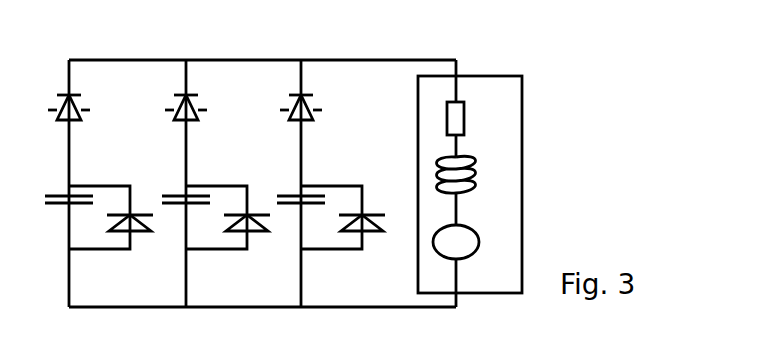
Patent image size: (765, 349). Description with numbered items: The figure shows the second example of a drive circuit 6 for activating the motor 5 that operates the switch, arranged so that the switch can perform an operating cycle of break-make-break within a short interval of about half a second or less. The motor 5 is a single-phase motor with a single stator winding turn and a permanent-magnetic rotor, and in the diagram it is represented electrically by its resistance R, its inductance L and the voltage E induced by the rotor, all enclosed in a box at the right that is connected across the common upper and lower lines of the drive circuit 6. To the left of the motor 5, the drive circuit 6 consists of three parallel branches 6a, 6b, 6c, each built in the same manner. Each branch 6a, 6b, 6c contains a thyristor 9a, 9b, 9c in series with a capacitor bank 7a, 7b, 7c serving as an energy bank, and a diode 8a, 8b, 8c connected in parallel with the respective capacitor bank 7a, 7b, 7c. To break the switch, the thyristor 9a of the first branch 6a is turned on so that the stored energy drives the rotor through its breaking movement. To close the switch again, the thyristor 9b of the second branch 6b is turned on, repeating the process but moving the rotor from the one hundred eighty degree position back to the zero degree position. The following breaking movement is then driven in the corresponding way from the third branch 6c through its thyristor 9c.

The motor 5 is at (522, 127).
The drive circuit 6 is at (360, 59).
The first branch 6a is at (69, 145).
The second branch 6b is at (186, 145).
The third branch 6c is at (301, 145).
The capacitor bank 7a is at (90, 206).
The capacitor bank 7b is at (207, 206).
The capacitor bank 7c is at (322, 206).
The diode 8a is at (131, 233).
The diode 8b is at (248, 233).
The diode 8c is at (363, 233).
The thyristor 9a is at (90, 110).
The thyristor 9b is at (207, 110).
The thyristor 9c is at (322, 110).